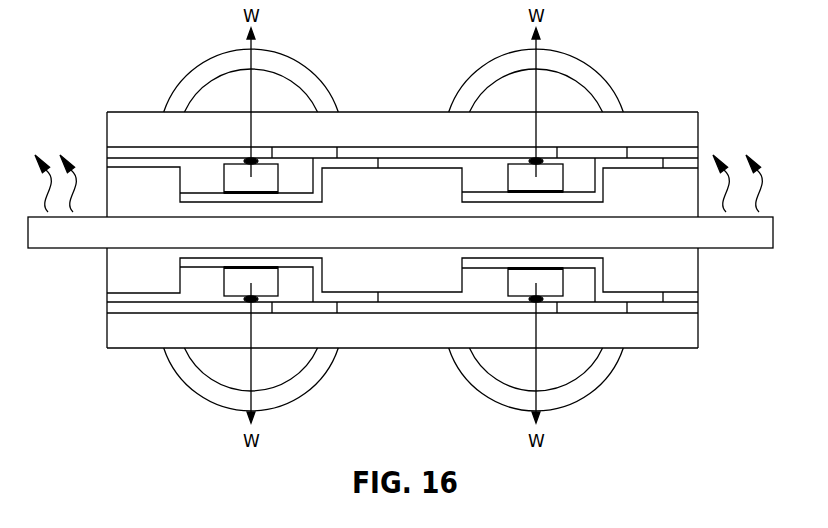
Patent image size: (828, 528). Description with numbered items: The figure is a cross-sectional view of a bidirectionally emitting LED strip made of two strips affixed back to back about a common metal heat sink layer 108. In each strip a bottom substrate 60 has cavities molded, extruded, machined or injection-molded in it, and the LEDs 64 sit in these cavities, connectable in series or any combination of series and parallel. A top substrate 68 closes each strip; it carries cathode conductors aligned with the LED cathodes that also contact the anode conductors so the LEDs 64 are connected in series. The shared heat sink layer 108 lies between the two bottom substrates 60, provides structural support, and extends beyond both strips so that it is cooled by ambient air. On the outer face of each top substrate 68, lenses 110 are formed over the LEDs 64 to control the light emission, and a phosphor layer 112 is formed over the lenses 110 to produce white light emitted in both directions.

The bottom substrate 60 is at (404, 197).
The LEDs 64 is at (272, 178).
The top substrate 68 is at (678, 139).
The metal heat sink layer 108 is at (90, 237).
The lenses 110 is at (287, 95).
The phosphor layer 112 is at (275, 65).